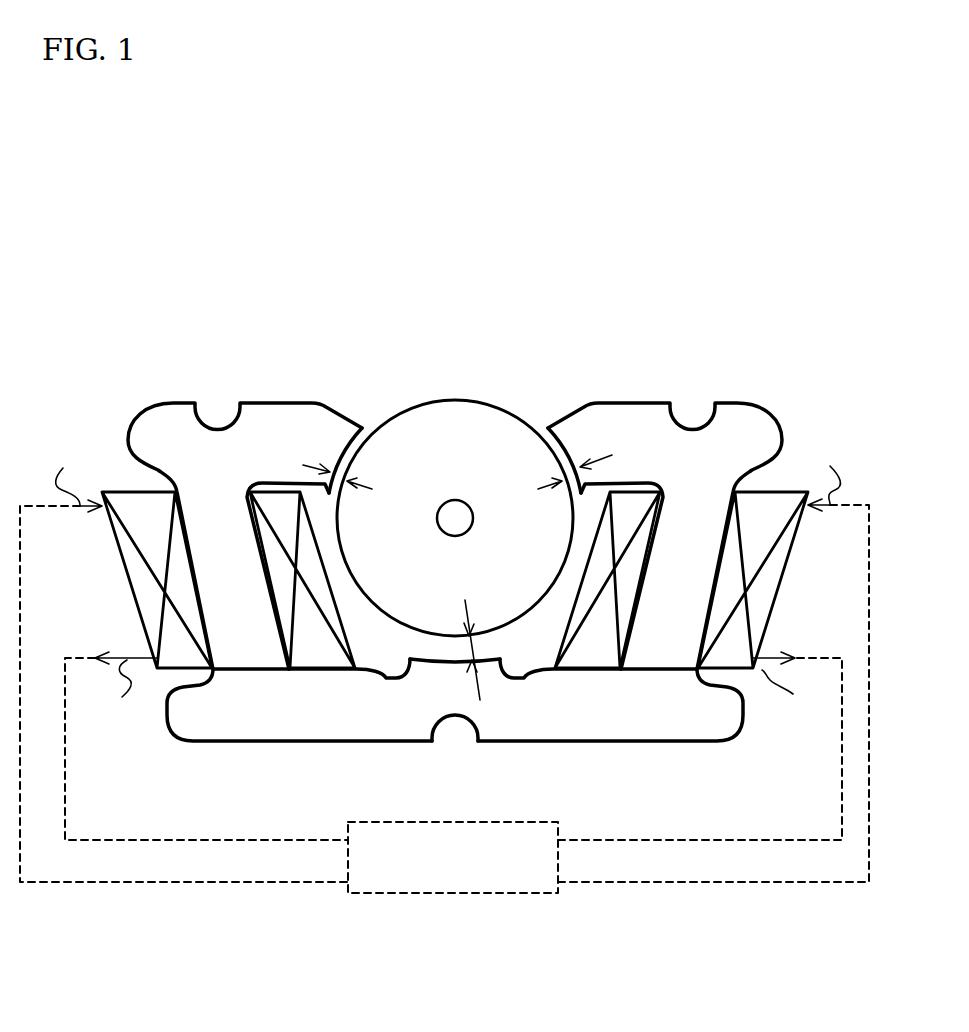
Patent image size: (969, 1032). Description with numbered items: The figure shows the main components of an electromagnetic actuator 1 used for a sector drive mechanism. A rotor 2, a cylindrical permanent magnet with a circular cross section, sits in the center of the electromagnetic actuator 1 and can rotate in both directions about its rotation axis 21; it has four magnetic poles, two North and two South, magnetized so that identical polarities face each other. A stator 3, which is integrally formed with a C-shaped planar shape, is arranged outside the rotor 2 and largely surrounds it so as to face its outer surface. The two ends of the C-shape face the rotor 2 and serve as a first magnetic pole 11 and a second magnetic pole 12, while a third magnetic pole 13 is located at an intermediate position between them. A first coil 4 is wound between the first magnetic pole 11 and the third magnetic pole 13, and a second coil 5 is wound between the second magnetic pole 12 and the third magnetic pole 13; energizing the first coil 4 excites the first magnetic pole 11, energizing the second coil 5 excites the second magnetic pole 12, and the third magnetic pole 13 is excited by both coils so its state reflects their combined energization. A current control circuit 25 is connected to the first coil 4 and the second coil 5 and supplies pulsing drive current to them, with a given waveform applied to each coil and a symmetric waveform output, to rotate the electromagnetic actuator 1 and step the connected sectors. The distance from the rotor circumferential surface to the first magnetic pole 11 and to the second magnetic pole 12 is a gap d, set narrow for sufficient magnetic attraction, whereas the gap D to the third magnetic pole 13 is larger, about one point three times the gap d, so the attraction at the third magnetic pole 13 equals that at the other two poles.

The electromagnetic actuator 1 is at (512, 342).
The rotor 2 is at (422, 428).
The stator 3 is at (720, 727).
The first coil 4 is at (115, 543).
The second coil 5 is at (798, 545).
The first magnetic pole 11 is at (330, 473).
The second magnetic pole 12 is at (560, 470).
The third magnetic pole 13 is at (447, 668).
The rotation axis 21 is at (473, 518).
The current control circuit 25 is at (452, 895).
The gap d is at (340, 486).
The gap D is at (480, 655).